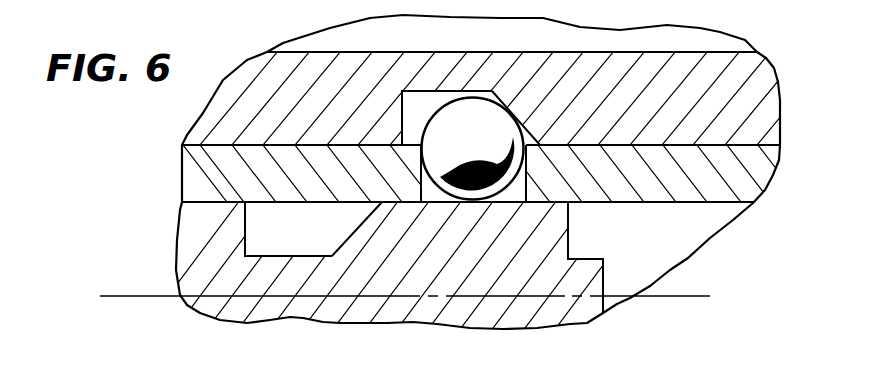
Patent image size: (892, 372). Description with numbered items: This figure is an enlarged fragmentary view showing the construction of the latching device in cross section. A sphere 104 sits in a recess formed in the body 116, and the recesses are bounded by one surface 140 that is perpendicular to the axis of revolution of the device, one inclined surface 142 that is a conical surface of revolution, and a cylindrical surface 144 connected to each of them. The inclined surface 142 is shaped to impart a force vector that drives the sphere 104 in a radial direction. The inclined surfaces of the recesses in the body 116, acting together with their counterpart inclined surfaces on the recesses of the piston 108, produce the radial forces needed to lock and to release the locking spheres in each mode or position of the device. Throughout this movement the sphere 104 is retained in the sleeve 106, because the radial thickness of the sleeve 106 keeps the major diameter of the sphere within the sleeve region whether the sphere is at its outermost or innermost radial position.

The sphere 104 is at (480, 144).
The sleeve 106 is at (667, 185).
The piston 108 is at (510, 309).
The body 116 is at (690, 110).
The surface perpendicular to the axis of revolution 140 is at (402, 109).
The inclined surface 142 is at (512, 110).
The cylindrical surface 144 is at (431, 90).